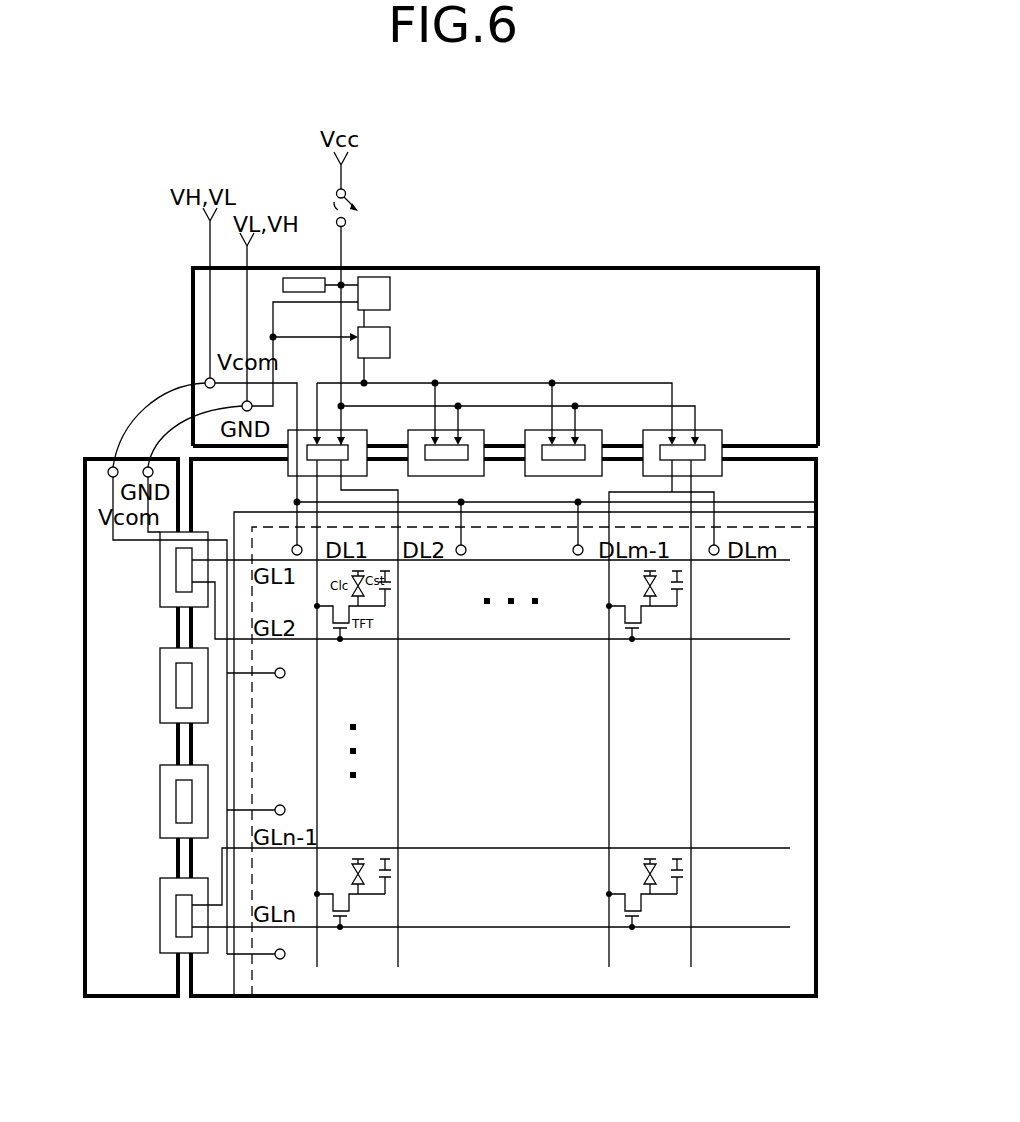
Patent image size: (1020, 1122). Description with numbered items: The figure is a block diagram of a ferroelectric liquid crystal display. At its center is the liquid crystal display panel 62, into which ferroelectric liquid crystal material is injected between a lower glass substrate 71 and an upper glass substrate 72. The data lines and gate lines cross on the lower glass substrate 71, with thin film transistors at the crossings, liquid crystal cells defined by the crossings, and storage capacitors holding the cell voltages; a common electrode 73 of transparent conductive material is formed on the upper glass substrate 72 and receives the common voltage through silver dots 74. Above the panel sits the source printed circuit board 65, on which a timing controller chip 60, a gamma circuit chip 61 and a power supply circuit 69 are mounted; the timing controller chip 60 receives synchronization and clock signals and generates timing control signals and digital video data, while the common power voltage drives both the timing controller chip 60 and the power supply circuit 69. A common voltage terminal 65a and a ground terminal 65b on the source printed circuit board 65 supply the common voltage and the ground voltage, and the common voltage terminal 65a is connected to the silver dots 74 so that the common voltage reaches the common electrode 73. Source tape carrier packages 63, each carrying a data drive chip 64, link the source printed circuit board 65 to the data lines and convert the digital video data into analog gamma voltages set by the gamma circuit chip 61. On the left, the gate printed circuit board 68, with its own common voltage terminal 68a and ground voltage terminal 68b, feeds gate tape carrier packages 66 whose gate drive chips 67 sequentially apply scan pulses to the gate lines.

The timing controller chip 60 is at (375, 277).
The gamma circuit chip 61 is at (390, 356).
The liquid crystal display panel 62 is at (826, 550).
The source tape carrier package 63 is at (722, 434).
The data drive chip 64 is at (705, 444).
The source printed circuit board 65 is at (820, 379).
The common voltage terminal 65a is at (204, 383).
The ground terminal 65b is at (241, 406).
The gate tape carrier package 66 is at (158, 940).
The gate drive chip 67 is at (173, 905).
The gate printed circuit board 68 is at (128, 998).
The common voltage terminal 68a is at (108, 479).
The ground voltage terminal 68b is at (118, 457).
The power supply circuit 69 is at (298, 278).
The lower glass substrate 71 is at (816, 512).
The upper glass substrate 72 is at (818, 459).
The common electrode 73 is at (818, 527).
The silver dots 74 is at (280, 960).